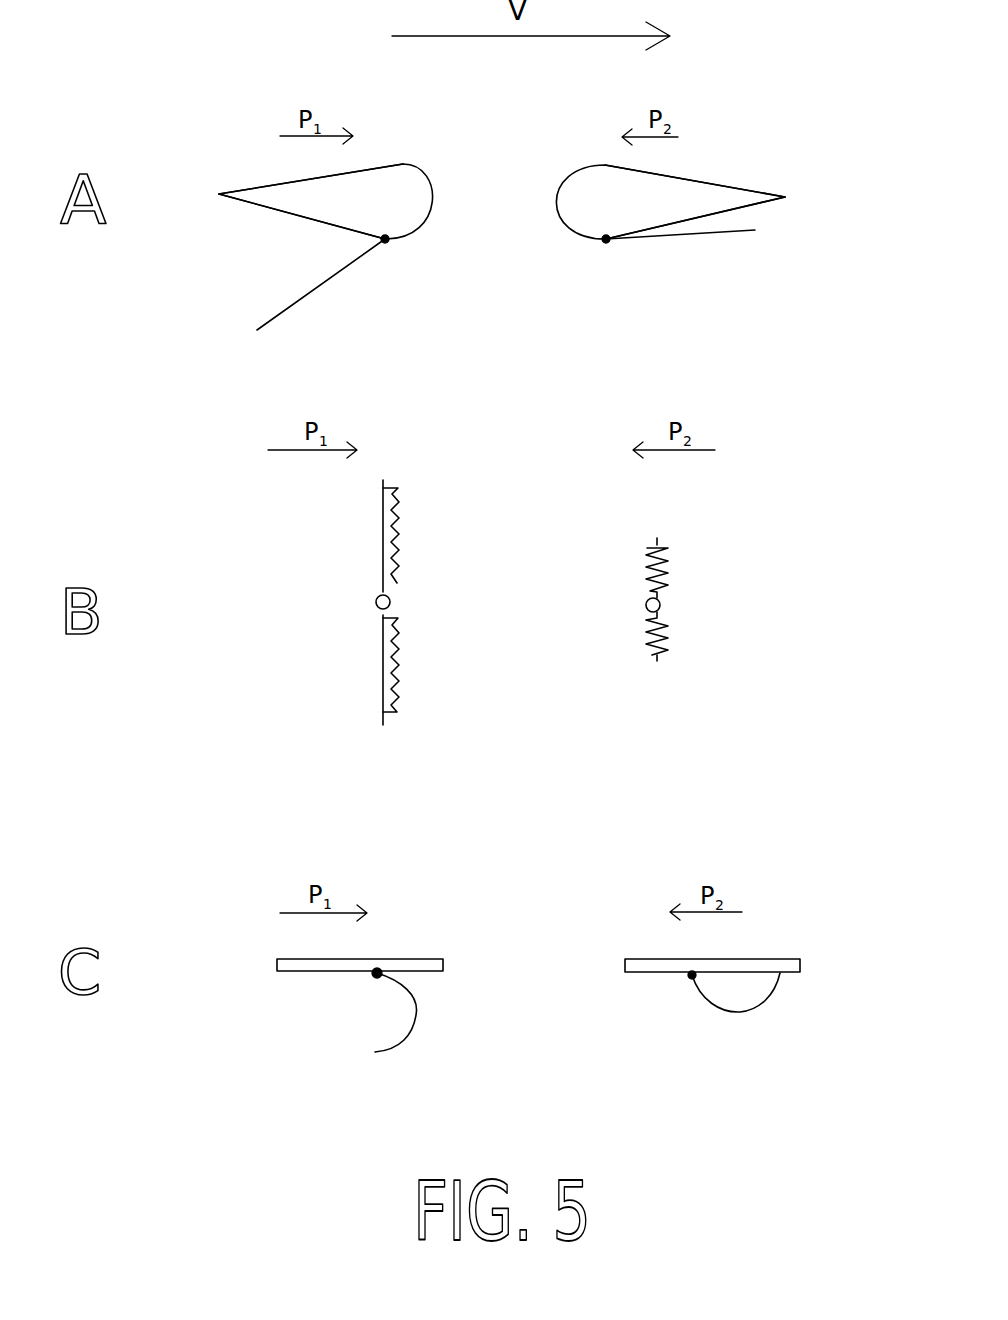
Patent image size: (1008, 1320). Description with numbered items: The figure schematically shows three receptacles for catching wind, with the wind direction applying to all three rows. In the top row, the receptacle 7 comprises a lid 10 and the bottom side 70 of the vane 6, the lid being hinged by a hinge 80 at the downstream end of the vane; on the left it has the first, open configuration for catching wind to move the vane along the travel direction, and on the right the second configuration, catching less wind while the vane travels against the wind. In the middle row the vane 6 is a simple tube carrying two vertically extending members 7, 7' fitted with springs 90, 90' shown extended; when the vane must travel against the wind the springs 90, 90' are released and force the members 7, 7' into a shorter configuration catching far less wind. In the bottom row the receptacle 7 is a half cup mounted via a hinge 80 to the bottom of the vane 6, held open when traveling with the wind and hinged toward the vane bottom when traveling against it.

In FIG. 5A, the vane 6 is at (403, 164).
In FIG. 5B, the vane 6 is at (392, 603).
In FIG. 5C, the vane 6 is at (410, 957).
In FIG. 5A, the receptacle 7 is at (509, 243).
In FIG. 5B, the receptacle 7 is at (485, 670).
In FIG. 5C, the receptacle 7 is at (582, 1018).
In FIG. 5B, the vertically extending member 7' is at (480, 536).
In FIG. 5A, the lid 10 is at (322, 284).
In FIG. 5A, the bottom side of vane 70 is at (262, 212).
In FIG. 5A, the hinge 80 is at (388, 245).
In FIG. 5C, the hinge 80 is at (372, 978).
In FIG. 5B, the spring 90 is at (560, 662).
In FIG. 5B, the spring 90' is at (563, 543).